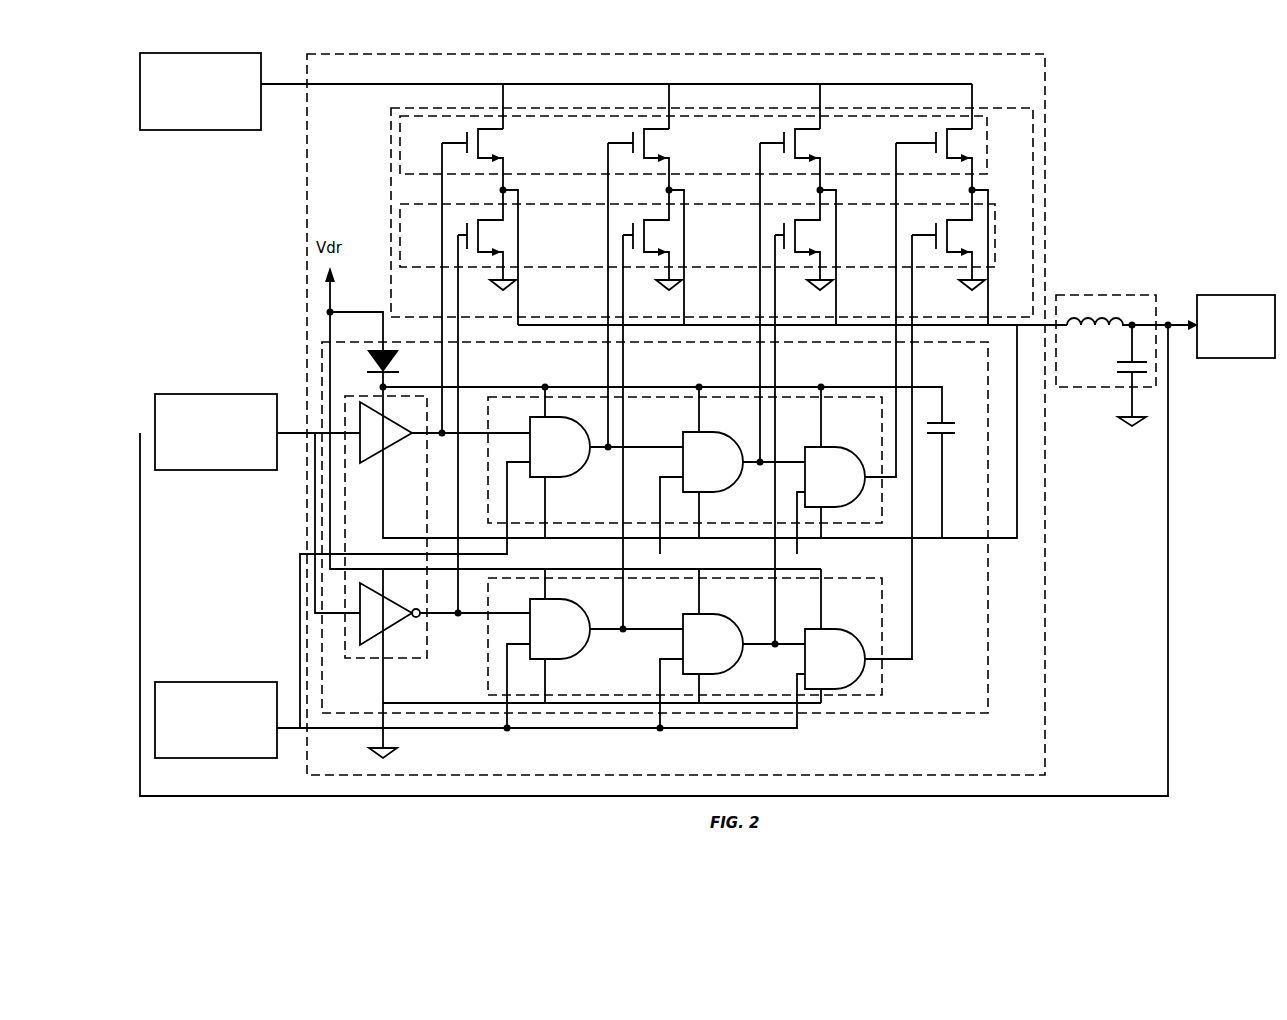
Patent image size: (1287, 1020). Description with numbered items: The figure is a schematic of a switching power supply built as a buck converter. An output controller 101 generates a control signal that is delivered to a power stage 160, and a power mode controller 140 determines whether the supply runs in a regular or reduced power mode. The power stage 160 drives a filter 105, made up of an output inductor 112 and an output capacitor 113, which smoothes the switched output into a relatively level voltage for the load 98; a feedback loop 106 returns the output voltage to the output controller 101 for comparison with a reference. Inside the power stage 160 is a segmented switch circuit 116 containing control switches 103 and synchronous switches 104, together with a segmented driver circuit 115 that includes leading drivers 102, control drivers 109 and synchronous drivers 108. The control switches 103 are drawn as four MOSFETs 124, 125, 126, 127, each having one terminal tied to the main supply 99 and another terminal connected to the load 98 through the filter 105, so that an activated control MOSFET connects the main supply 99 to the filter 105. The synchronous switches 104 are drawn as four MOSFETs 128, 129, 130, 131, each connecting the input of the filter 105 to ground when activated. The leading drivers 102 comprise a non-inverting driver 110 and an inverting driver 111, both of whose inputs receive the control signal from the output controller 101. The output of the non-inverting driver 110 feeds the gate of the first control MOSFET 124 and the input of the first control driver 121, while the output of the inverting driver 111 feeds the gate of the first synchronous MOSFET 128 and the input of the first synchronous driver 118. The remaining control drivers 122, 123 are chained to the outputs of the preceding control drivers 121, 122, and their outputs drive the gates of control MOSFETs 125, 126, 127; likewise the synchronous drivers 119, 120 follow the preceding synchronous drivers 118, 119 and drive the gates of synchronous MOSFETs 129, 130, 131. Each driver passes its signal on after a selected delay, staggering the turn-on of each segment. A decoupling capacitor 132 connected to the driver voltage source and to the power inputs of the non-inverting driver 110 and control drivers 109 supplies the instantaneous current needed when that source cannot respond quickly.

The main supply 99 is at (192, 116).
The output controller 101 is at (204, 457).
The power mode controller 140 is at (204, 745).
The load 98 is at (1228, 346).
The feedback loop 106 is at (1168, 762).
The power stage 160 is at (963, 768).
The segmented switch circuit 116 is at (1033, 147).
The control switches 103 is at (434, 164).
The synchronous switches 104 is at (434, 250).
The segmented driver circuit 115 is at (988, 627).
The leading drivers 102 is at (395, 658).
The control drivers 109 is at (871, 425).
The synchronous drivers 108 is at (871, 605).
The filter 105 is at (1089, 381).
The non-inverting driver 110 is at (391, 442).
The inverting driver 111 is at (391, 622).
The first synchronous driver 118 is at (568, 637).
The synchronous driver 119 is at (721, 652).
The synchronous driver 120 is at (843, 667).
The first control driver 121 is at (568, 455).
The control driver 122 is at (721, 470).
The control driver 123 is at (843, 485).
The first control MOSFET 124 is at (498, 147).
The control MOSFET 125 is at (672, 147).
The control MOSFET 126 is at (823, 147).
The control MOSFET 127 is at (975, 147).
The first synchronous MOSFET 128 is at (502, 237).
The synchronous MOSFET 129 is at (667, 237).
The synchronous MOSFET 130 is at (819, 237).
The synchronous MOSFET 131 is at (969, 237).
The output inductor 112 is at (1097, 312).
The output capacitor 113 is at (1147, 369).
The decoupling capacitor 132 is at (953, 428).